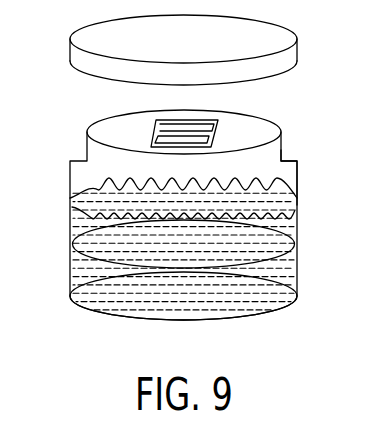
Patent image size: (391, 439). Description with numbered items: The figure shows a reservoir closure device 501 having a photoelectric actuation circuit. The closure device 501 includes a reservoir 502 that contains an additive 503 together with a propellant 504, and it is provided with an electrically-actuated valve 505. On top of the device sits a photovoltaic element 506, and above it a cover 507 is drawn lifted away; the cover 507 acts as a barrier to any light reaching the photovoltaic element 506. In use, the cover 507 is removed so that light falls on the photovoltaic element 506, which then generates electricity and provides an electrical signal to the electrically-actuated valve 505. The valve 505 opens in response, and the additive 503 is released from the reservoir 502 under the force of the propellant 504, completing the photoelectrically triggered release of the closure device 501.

The reservoir closure device 501 is at (69, 183).
The reservoir 502 is at (80, 208).
The additive 503 is at (291, 229).
The propellant 504 is at (298, 182).
The electrically-actuated valve 505 is at (291, 277).
The photovoltaic element 506 is at (213, 128).
The cover 507 is at (297, 56).